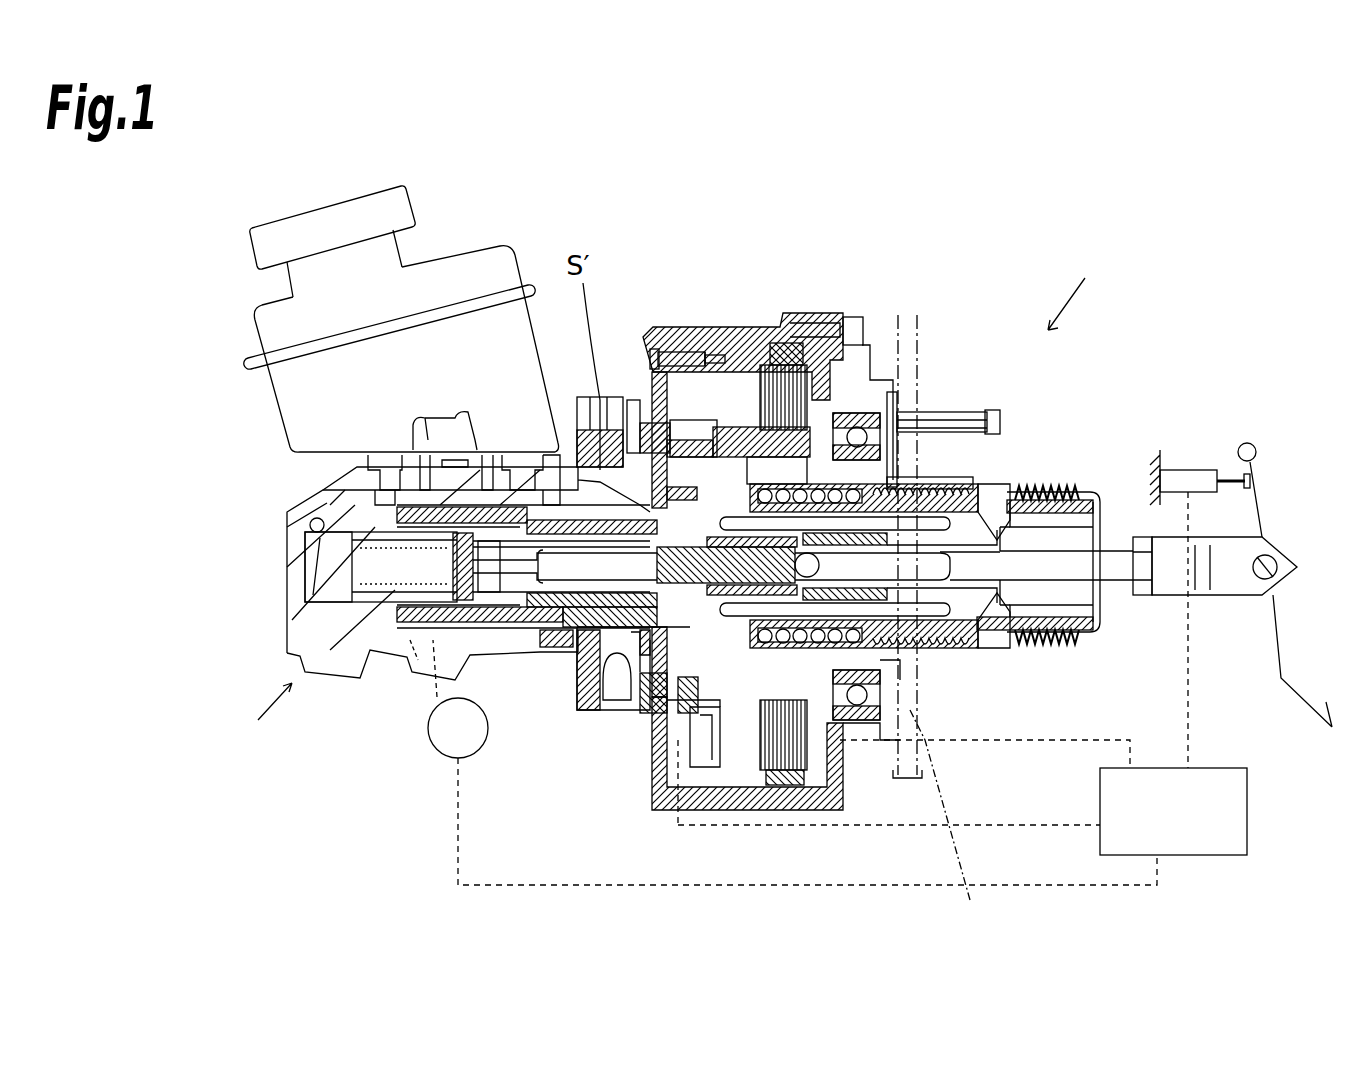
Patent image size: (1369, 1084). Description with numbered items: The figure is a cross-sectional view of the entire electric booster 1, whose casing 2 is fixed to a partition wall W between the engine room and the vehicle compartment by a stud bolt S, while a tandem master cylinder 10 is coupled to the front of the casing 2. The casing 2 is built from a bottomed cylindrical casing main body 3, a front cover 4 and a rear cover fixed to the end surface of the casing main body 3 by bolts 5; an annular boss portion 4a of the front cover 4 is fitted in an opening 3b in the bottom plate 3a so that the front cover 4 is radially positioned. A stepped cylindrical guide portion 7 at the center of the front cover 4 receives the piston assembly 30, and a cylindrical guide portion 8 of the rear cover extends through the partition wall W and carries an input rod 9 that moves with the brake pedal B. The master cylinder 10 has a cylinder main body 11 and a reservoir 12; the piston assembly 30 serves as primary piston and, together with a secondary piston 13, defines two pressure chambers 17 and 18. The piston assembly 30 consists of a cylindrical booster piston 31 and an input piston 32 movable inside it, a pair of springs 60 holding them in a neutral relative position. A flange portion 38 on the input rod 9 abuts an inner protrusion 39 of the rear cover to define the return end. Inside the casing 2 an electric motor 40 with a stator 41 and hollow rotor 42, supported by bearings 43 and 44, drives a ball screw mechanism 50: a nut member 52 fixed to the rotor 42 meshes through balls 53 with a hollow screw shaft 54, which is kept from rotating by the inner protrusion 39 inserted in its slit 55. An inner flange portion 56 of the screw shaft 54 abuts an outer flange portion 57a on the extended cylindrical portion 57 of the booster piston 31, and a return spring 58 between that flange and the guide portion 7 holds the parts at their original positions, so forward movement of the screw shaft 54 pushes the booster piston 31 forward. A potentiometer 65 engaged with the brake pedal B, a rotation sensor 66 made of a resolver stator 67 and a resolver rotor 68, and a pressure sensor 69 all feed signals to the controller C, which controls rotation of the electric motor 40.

The electric booster 1 is at (1075, 278).
The casing 2 is at (684, 311).
The casing main body 3 is at (790, 760).
The bottom plate 3a is at (640, 660).
The opening 3b is at (617, 680).
The front cover 4 is at (577, 687).
The annular boss portion 4a is at (590, 410).
The bolts 5 is at (853, 317).
The cylindrical guide portion 7 is at (688, 705).
The cylindrical guide portion 8 is at (980, 633).
The input rod 9 is at (1060, 573).
The tandem master cylinder 10 is at (230, 766).
The cylinder main body 11 is at (337, 495).
The reservoir 12 is at (275, 330).
The secondary piston 13 is at (412, 640).
The pressure chamber 17 is at (520, 457).
The pressure chamber 18 is at (337, 568).
The piston assembly 30 is at (610, 420).
The booster piston 31 is at (745, 645).
The input piston 32 is at (775, 655).
The flange portion 38 is at (1063, 643).
The inner protrusion 39 is at (1013, 507).
The electric motor 40 is at (780, 313).
The stator 41 is at (858, 720).
The rotor 42 is at (818, 740).
The bearing 43 is at (672, 504).
The bearing 44 is at (865, 410).
The ball screw mechanism 50 is at (865, 712).
The nut member 52 is at (878, 420).
The balls 53 is at (890, 495).
The screw shaft 54 is at (957, 600).
The slit 55 is at (1060, 507).
The inner flange portion 56 is at (985, 497).
The extended cylindrical portion 57 is at (927, 610).
The outer flange portion 57a is at (940, 605).
The return spring 58 is at (952, 824).
The springs 60 is at (832, 400).
The potentiometer 65 is at (1193, 477).
The rotation sensor 66 is at (695, 248).
The resolver stator 67 is at (715, 385).
The resolver rotor 68 is at (740, 373).
The pressure sensor 69 is at (427, 737).
The stud bolt S is at (993, 406).
The partition wall W is at (917, 337).
The brake pedal B is at (1280, 650).
The controller C is at (1197, 843).